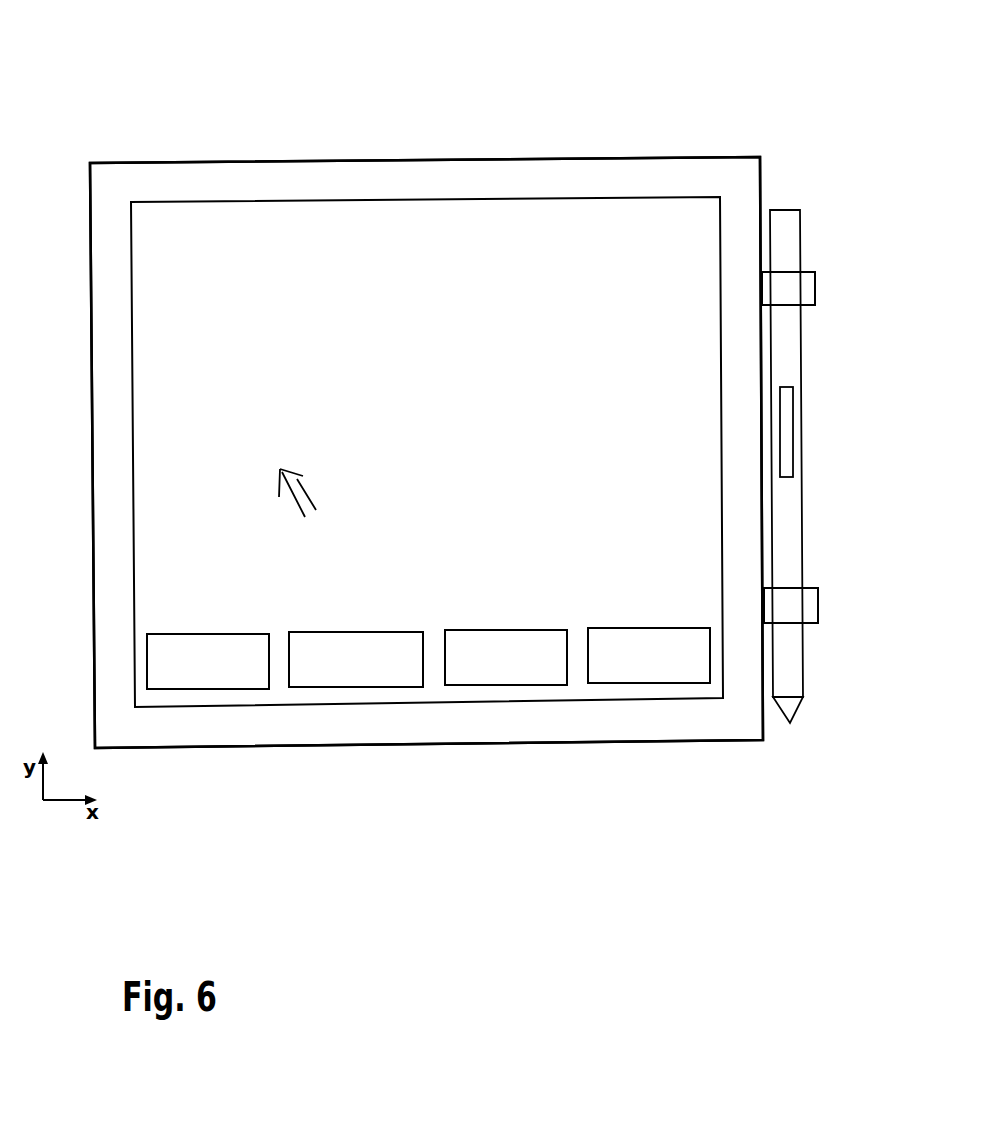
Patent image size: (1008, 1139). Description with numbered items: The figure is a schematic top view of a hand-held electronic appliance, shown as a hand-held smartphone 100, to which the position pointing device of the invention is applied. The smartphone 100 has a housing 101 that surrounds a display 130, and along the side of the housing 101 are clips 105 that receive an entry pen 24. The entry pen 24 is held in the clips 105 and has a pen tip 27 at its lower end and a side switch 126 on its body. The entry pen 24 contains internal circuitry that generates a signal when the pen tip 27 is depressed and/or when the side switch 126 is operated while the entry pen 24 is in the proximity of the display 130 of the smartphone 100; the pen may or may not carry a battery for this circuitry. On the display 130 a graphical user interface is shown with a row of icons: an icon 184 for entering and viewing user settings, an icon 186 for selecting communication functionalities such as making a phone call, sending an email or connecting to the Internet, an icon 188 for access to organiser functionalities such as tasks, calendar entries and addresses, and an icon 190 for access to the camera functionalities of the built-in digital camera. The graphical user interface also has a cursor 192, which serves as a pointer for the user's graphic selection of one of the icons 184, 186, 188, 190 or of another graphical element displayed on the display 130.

The smartphone 100 is at (102, 96).
The housing 101 is at (293, 162).
The display 130 is at (131, 453).
The entry pen 24 is at (803, 348).
The pen tip 27 is at (797, 717).
The side switch 126 is at (793, 432).
The stylus holder clip 105 is at (815, 290).
The cursor 192 is at (308, 492).
The icon for user settings 184 is at (210, 633).
The icon for communication functionalities 186 is at (356, 631).
The icon for organiser functionalities 188 is at (508, 629).
The icon for camera functionalities 190 is at (653, 627).